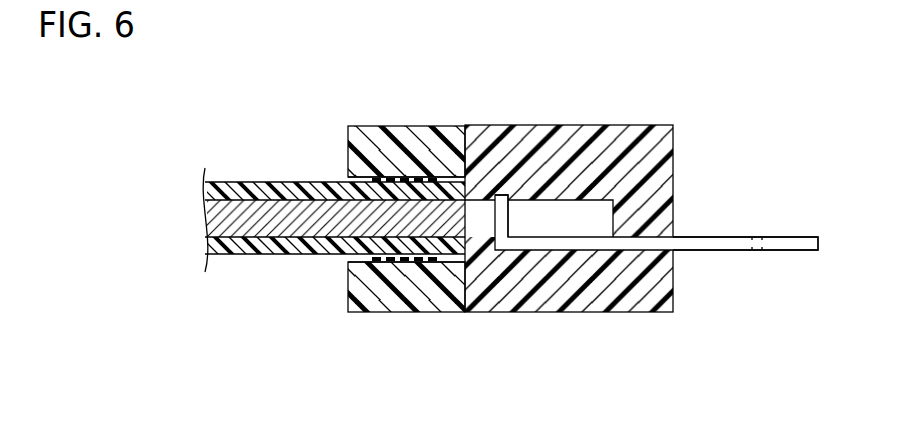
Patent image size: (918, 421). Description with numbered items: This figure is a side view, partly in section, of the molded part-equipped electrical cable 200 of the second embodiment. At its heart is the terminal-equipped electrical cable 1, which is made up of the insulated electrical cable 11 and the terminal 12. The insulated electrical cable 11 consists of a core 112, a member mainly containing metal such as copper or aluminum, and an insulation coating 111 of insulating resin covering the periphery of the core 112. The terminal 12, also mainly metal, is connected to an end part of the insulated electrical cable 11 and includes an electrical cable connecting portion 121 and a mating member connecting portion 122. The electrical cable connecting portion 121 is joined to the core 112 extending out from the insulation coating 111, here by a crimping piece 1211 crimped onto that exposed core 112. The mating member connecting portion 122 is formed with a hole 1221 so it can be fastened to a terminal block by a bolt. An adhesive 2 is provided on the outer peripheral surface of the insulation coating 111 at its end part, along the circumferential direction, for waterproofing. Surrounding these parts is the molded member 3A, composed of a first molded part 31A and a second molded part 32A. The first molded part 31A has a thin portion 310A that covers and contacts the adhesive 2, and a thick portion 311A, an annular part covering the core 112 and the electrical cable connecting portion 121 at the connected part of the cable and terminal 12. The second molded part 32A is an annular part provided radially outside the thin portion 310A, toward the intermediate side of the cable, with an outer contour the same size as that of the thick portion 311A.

The molded part-equipped electrical cable 200 is at (734, 61).
The terminal-equipped electrical cable 1 is at (196, 237).
The insulated electrical cable 11 is at (242, 180).
The insulation coating 111 is at (245, 255).
The core 112 is at (308, 225).
The adhesive 2 is at (399, 260).
The molded member 3A is at (686, 305).
The first molded part 31A is at (535, 72).
The thin portion 310A is at (425, 172).
The thick portion 311A is at (506, 125).
The second molded part 32A is at (360, 126).
The terminal 12 is at (825, 247).
The electrical cable connecting portion 121 is at (586, 243).
The crimping piece 1211 is at (503, 220).
The mating member connecting portion 122 is at (725, 242).
The hole 1221 is at (780, 237).